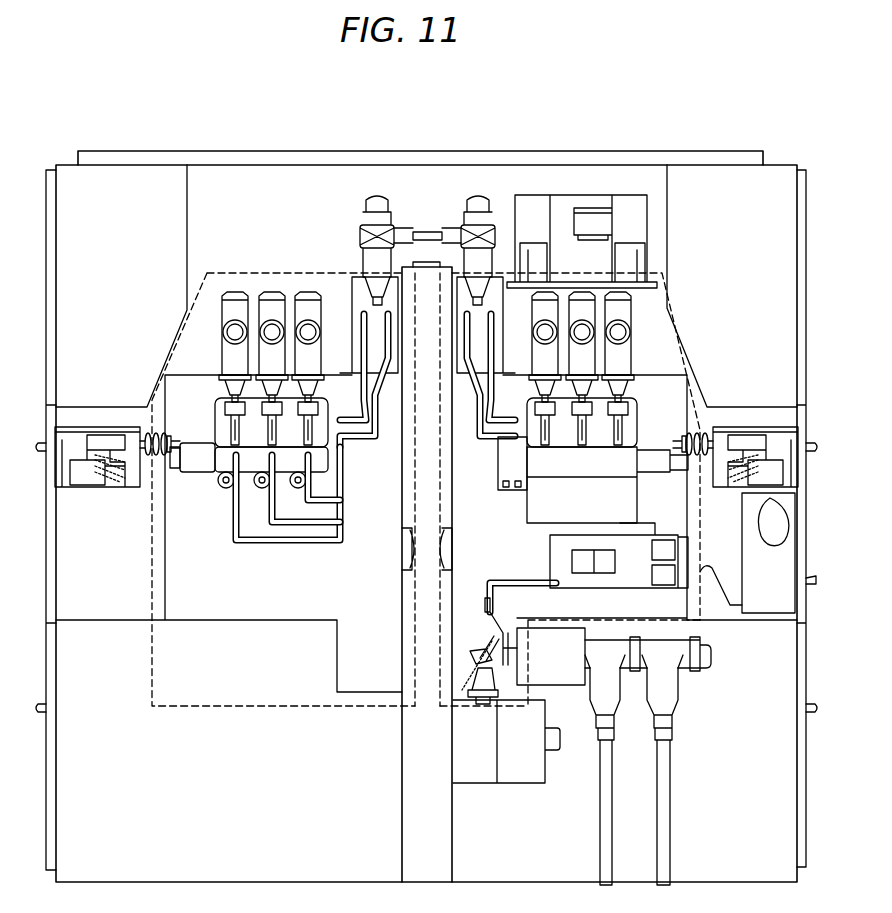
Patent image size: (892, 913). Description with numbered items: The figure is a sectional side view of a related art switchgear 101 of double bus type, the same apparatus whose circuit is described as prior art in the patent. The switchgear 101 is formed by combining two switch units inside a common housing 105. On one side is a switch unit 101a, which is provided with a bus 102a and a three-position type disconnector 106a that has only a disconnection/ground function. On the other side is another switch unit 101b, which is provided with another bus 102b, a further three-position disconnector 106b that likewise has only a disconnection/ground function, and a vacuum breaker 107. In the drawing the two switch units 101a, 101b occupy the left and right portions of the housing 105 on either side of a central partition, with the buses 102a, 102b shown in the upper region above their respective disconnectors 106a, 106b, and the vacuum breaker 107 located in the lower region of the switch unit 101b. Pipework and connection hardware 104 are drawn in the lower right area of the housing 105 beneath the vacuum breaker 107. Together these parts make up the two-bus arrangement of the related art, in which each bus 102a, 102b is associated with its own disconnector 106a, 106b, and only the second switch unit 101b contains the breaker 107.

The switchgear 101 is at (632, 150).
The switch unit 101a is at (258, 706).
The switch unit 101b is at (473, 708).
The bus 102a is at (329, 292).
The bus 102b is at (632, 341).
The exhaust pipes 104 is at (715, 630).
The housing 105 is at (444, 150).
The three-position type disconnector 106a is at (213, 447).
The three-position disconnector 106b is at (640, 447).
The vacuum breaker 107 is at (550, 555).